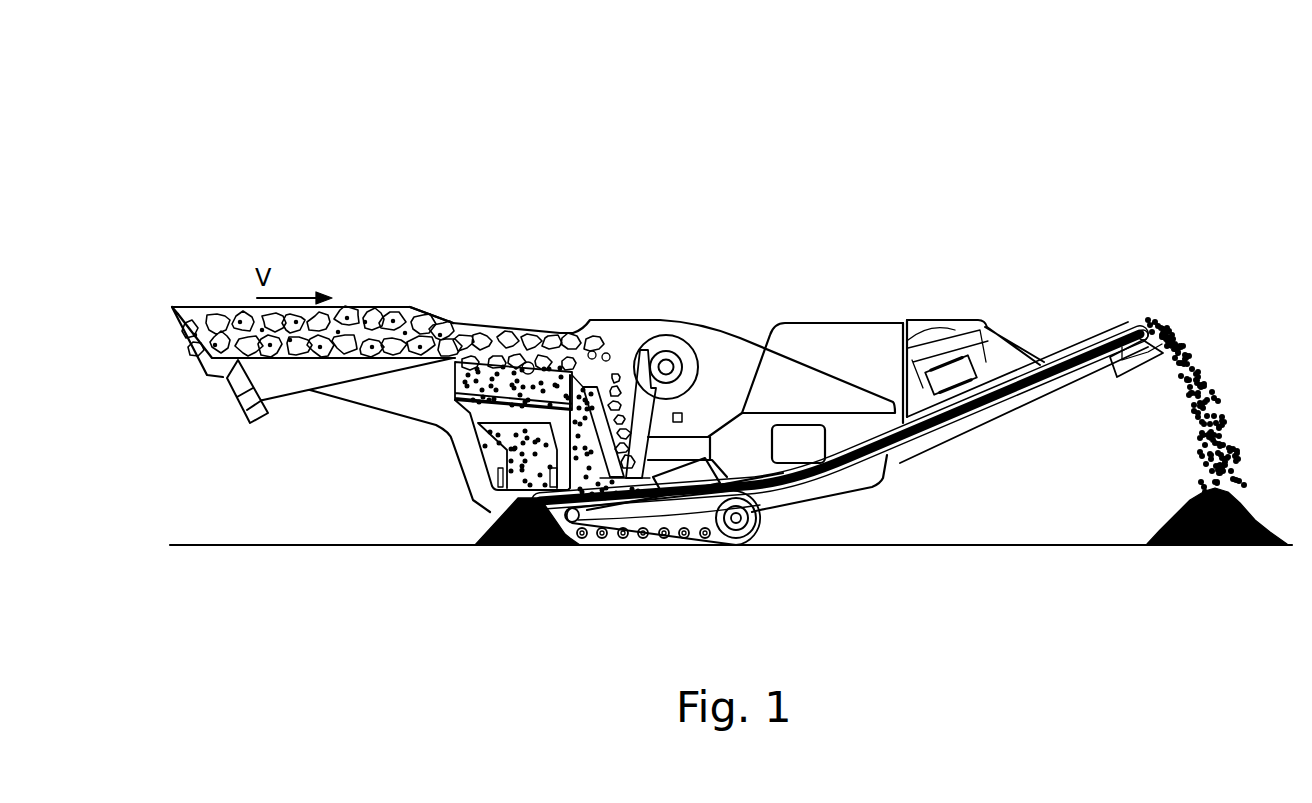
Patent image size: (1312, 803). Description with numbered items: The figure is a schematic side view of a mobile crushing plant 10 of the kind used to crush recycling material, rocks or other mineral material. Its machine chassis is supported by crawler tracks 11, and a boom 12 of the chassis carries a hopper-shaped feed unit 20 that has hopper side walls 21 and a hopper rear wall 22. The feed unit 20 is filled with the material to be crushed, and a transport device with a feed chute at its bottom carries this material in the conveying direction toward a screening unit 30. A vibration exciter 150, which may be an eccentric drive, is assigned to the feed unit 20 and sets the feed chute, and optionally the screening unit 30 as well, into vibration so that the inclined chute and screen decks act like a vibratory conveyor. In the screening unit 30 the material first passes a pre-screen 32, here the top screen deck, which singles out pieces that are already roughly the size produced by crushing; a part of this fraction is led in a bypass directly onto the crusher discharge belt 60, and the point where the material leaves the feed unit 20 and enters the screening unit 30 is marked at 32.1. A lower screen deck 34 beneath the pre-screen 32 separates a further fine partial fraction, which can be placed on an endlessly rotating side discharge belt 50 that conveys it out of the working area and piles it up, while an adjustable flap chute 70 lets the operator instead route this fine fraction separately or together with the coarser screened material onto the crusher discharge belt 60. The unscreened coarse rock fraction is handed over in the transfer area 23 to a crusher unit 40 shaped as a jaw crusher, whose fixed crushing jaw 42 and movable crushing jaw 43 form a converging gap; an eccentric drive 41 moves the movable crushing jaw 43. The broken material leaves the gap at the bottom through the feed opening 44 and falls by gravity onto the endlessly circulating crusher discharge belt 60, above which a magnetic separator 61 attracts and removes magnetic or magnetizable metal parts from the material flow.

The mobile crushing plant 10 is at (742, 330).
The crawler track 11 is at (745, 542).
The boom 12 is at (397, 393).
The feed unit 20 is at (232, 309).
The hopper side wall 21 is at (360, 307).
The hopper rear wall 22 is at (176, 333).
The transfer area 23 is at (636, 340).
The screening unit 30 is at (532, 353).
The pre-screen 32 is at (542, 368).
The material transfer point 32.1 is at (466, 322).
The lower screen deck 34 is at (437, 317).
The crusher unit 40 is at (640, 350).
The eccentric drive 41 is at (677, 347).
The fixed crushing jaw 42 is at (533, 547).
The movable crushing jaw 43 is at (643, 507).
The feed opening 44 is at (622, 502).
The side discharge belt 50 is at (514, 465).
The crusher discharge belt 60 is at (693, 512).
The magnetic separator 61 is at (950, 377).
The adjustable flap chute 70 is at (612, 343).
The vibration exciter 150 is at (253, 417).